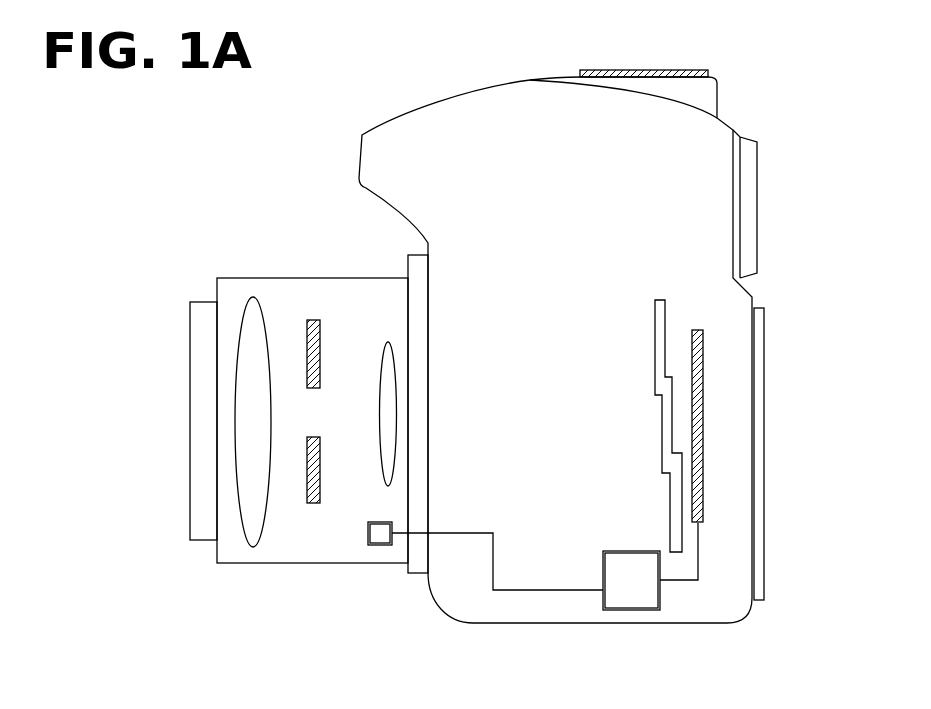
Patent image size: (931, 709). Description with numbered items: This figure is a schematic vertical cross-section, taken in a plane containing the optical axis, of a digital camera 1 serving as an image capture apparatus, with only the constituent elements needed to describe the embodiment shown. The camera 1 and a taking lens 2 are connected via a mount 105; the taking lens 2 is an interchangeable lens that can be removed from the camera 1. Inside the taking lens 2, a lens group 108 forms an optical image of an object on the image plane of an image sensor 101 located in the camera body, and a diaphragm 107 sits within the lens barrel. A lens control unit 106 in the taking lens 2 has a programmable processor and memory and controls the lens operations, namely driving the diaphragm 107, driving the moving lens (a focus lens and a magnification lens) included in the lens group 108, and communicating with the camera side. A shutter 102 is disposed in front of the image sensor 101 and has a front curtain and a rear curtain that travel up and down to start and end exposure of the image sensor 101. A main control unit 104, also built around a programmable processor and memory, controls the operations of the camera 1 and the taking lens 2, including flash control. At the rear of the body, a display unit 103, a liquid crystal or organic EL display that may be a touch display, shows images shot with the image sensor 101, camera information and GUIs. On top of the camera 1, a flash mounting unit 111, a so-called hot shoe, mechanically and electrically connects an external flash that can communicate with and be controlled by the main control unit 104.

The digital camera 1 is at (353, 138).
The taking lens 2 is at (183, 297).
The image sensor 101 is at (703, 435).
The shutter 102 is at (665, 313).
The display unit 103 is at (764, 352).
The main control unit 104 is at (631, 610).
The mount 105 is at (420, 573).
The lens control unit 106 is at (372, 545).
The diaphragm 107 is at (308, 388).
The lens group 108 is at (388, 342).
The flash mounting unit 111 is at (608, 70).